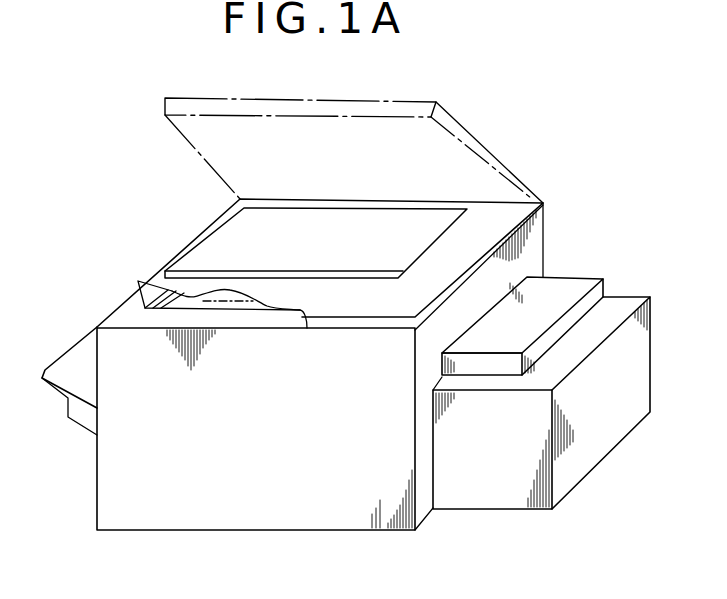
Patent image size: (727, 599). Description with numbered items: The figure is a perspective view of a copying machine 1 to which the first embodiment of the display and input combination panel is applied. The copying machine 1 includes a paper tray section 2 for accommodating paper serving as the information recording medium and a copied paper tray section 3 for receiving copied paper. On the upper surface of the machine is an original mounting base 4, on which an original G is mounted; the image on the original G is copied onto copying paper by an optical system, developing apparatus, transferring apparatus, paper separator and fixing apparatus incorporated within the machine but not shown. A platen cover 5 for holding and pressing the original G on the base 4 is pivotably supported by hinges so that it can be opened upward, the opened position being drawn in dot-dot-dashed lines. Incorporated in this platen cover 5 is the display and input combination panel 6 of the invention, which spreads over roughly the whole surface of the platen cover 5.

The copying machine 1 is at (203, 497).
The paper tray section 2 is at (622, 305).
The copied paper tray section 3 is at (65, 355).
The original mounting base 4 is at (152, 302).
The platen cover 5 is at (407, 100).
The display and input combination panel 6 is at (312, 229).
The original G is at (197, 297).